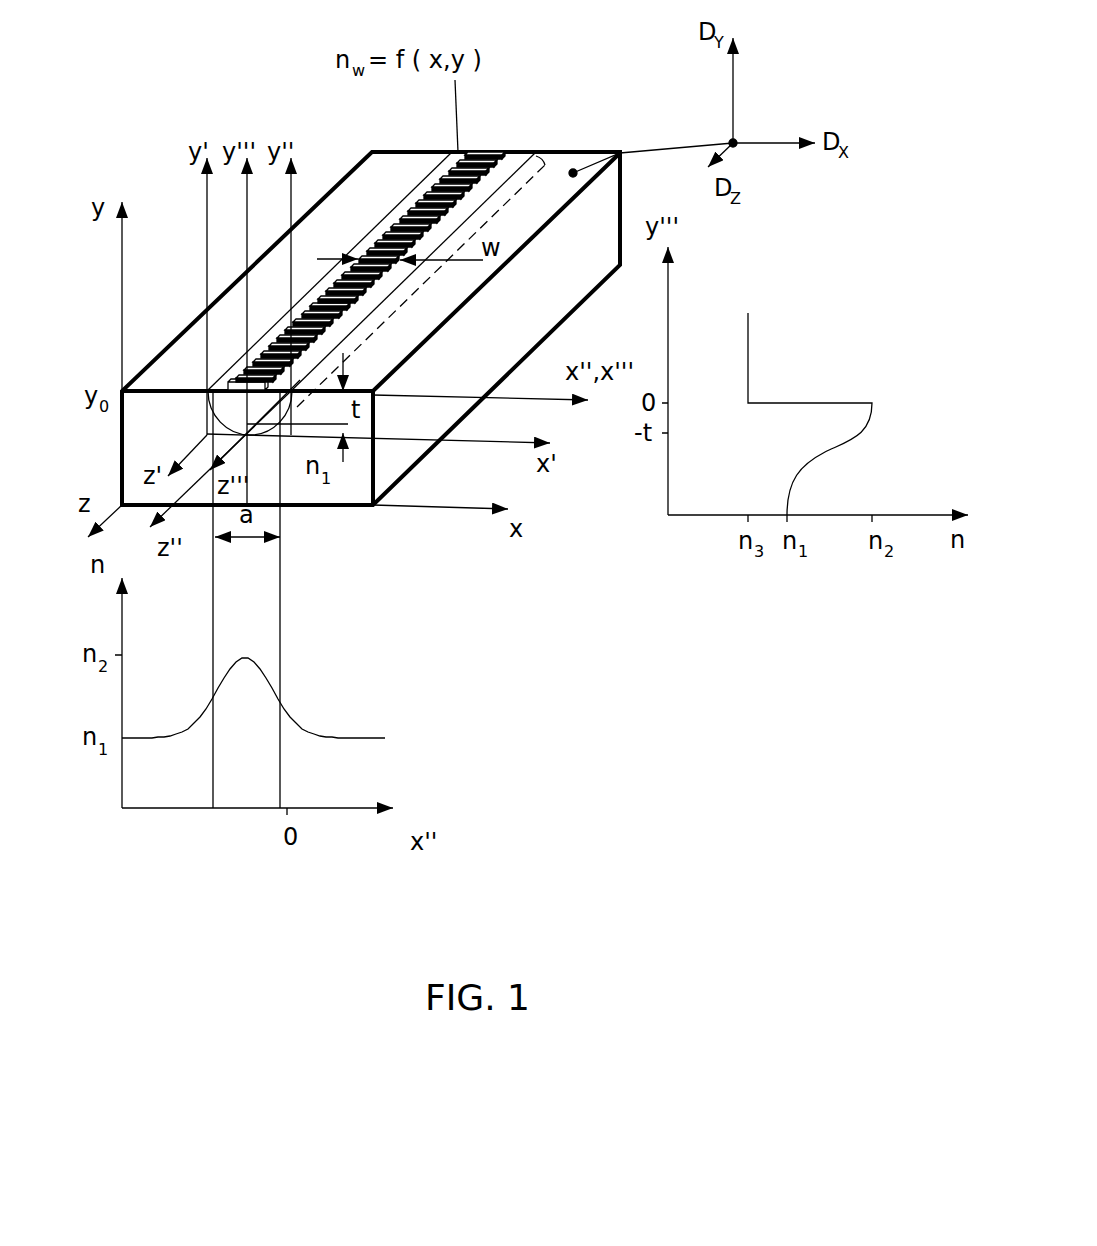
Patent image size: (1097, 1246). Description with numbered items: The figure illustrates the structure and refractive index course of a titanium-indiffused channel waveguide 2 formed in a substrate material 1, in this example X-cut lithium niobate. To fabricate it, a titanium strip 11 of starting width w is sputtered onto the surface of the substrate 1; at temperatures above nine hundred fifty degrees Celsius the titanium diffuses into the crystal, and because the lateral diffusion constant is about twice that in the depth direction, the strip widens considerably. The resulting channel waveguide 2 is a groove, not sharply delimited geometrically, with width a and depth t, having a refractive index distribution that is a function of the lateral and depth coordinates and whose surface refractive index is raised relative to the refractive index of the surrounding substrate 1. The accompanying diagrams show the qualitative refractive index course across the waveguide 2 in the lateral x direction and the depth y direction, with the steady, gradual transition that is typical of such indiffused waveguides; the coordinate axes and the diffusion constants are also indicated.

The substrate 1 is at (533, 308).
The channel waveguide 2 is at (452, 150).
The titanium strip 11 is at (488, 140).